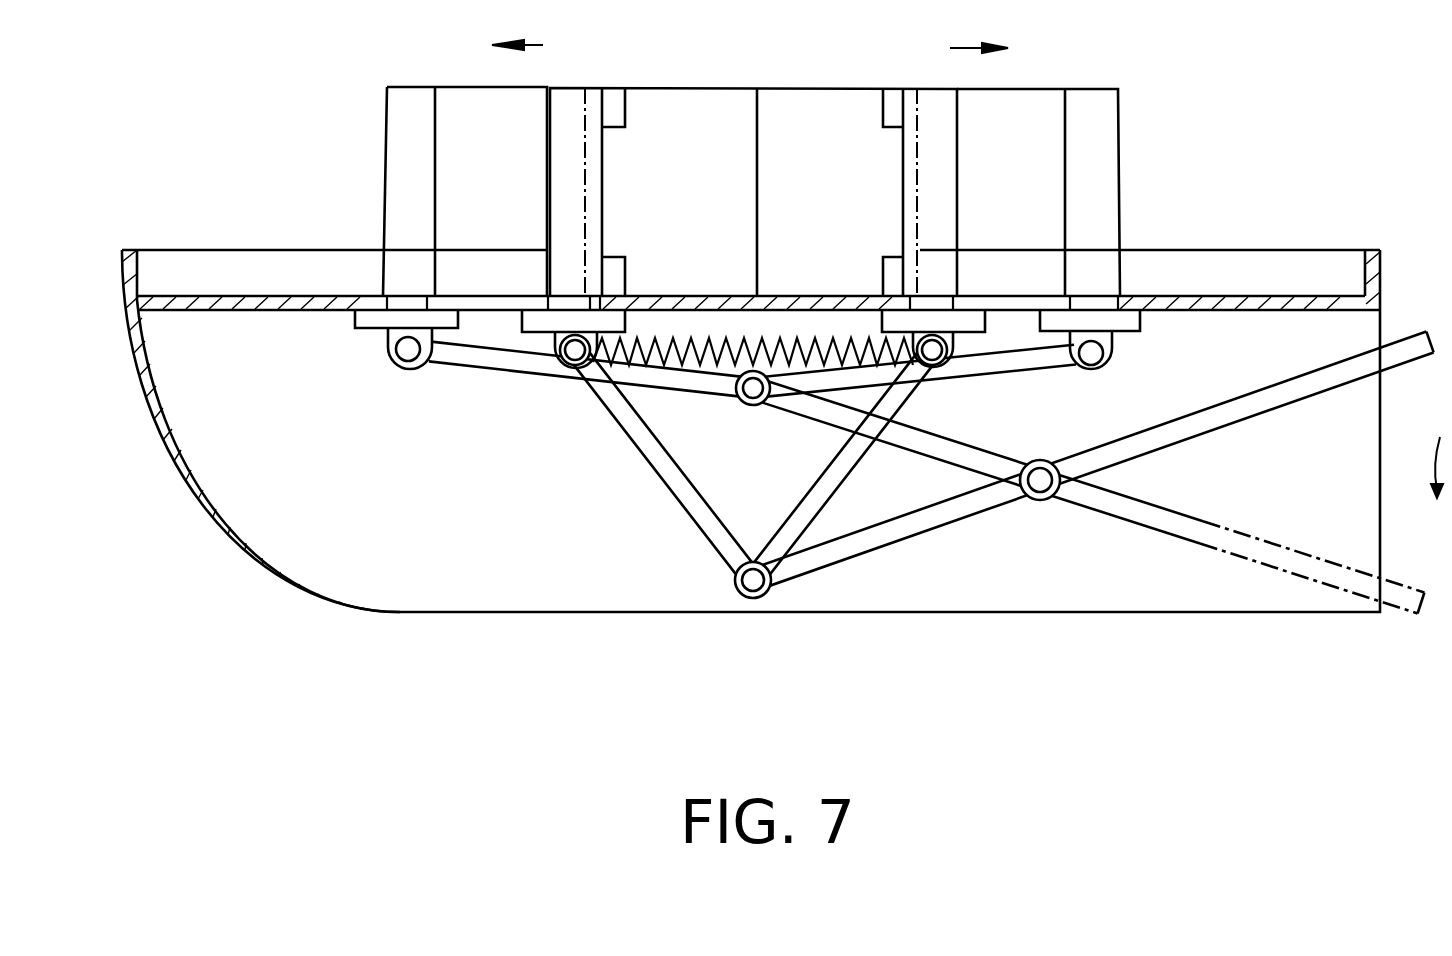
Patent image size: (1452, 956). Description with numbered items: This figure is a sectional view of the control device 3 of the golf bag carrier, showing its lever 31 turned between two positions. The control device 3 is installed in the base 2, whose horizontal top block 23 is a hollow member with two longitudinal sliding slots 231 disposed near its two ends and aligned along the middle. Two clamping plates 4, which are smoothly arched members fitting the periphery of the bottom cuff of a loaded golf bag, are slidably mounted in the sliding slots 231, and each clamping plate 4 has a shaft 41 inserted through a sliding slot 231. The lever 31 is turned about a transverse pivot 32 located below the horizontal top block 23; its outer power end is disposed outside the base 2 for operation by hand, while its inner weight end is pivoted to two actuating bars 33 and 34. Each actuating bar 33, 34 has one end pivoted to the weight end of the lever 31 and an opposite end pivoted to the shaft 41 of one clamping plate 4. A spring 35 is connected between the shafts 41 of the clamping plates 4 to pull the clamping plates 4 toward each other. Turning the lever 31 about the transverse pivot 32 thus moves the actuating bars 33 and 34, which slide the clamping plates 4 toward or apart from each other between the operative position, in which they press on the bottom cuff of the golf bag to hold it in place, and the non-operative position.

The base 2 is at (1268, 253).
The horizontal top block 23 is at (1183, 303).
The longitudinal sliding slots 231 is at (480, 302).
The clamping plates 4 is at (857, 88).
The shaft 41 is at (941, 183).
The control device 3 is at (1263, 417).
The lever 31 is at (1200, 423).
The transverse pivot 32 is at (1041, 487).
The actuating bar 33 is at (835, 473).
The actuating bar 34 is at (662, 463).
The spring 35 is at (768, 350).